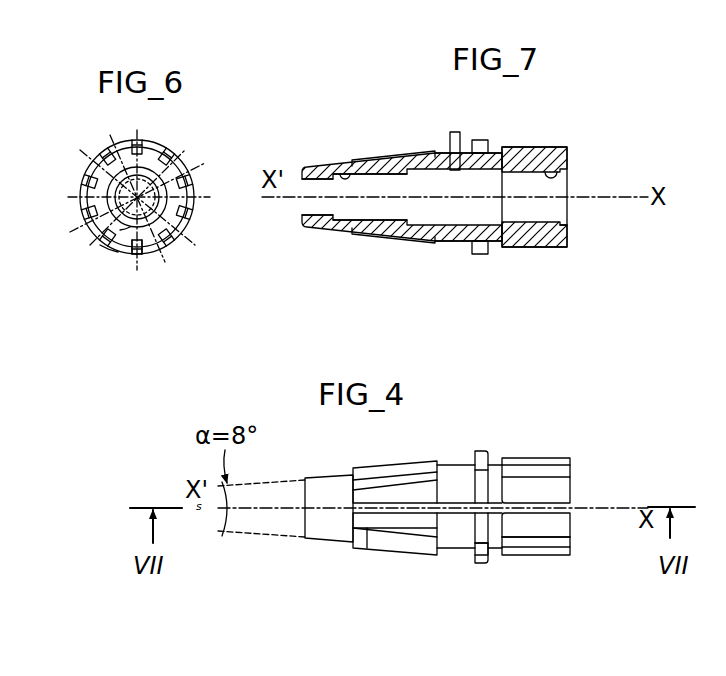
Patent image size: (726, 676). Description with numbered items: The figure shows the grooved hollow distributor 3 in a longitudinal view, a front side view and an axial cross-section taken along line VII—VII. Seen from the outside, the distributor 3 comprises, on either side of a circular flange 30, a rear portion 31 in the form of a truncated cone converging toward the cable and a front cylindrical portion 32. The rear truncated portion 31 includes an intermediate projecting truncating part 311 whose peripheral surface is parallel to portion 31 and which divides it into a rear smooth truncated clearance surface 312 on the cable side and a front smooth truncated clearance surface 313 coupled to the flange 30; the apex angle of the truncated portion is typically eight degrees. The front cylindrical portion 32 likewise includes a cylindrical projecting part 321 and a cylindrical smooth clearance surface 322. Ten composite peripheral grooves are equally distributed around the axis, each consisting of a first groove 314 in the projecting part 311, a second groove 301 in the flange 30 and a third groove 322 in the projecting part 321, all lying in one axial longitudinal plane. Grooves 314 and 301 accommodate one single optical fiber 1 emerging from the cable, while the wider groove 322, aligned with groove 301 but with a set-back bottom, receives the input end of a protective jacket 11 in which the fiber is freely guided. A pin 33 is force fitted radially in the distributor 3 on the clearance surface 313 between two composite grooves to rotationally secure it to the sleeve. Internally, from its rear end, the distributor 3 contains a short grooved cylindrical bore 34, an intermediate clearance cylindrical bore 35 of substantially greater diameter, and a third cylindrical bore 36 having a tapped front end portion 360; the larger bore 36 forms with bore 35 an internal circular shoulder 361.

In FIG. 4, the optical fiber 1 is at (258, 512).
In FIG. 7, the distributor 3 is at (570, 130).
In FIG. 4, the distributor 3 is at (571, 440).
In FIG. 4, the protective jacket 11 is at (604, 508).
In FIG. 6, the circular flange 30 is at (188, 228).
In FIG. 7, the circular flange 30 is at (483, 255).
In FIG. 4, the circular flange 30 is at (483, 462).
In FIG. 7, the rear portion 31 is at (384, 200).
In FIG. 7, the front cylindrical portion 32 is at (572, 235).
In FIG. 7, the pin 33 is at (470, 132).
In FIG. 7, the grooved cylindrical bore 34 is at (306, 212).
In FIG. 7, the intermediate clearance cylindrical bore 35 is at (345, 176).
In FIG. 7, the third cylindrical bore 36 is at (464, 254).
In FIG. 6, the second groove 301 is at (139, 255).
In FIG. 4, the second groove 301 is at (479, 556).
In FIG. 7, the intermediate projecting truncating part 311 is at (400, 243).
In FIG. 4, the intermediate projecting truncating part 311 is at (403, 540).
In FIG. 4, the rear smooth truncated clearance surface 312 is at (320, 536).
In FIG. 4, the front smooth truncated clearance surface 313 is at (450, 470).
In FIG. 4, the first groove 314 is at (360, 550).
In FIG. 6, the projecting part 321 is at (98, 240).
In FIG. 7, the projecting part 321 is at (565, 250).
In FIG. 4, the projecting part 321 is at (562, 488).
In FIG. 6, the third groove 322 is at (172, 162).
In FIG. 4, the third groove 322 is at (565, 543).
In FIG. 6, the tapped front end portion 360 is at (123, 232).
In FIG. 7, the tapped front end portion 360 is at (556, 176).
In FIG. 7, the internal circular shoulder 361 is at (420, 246).